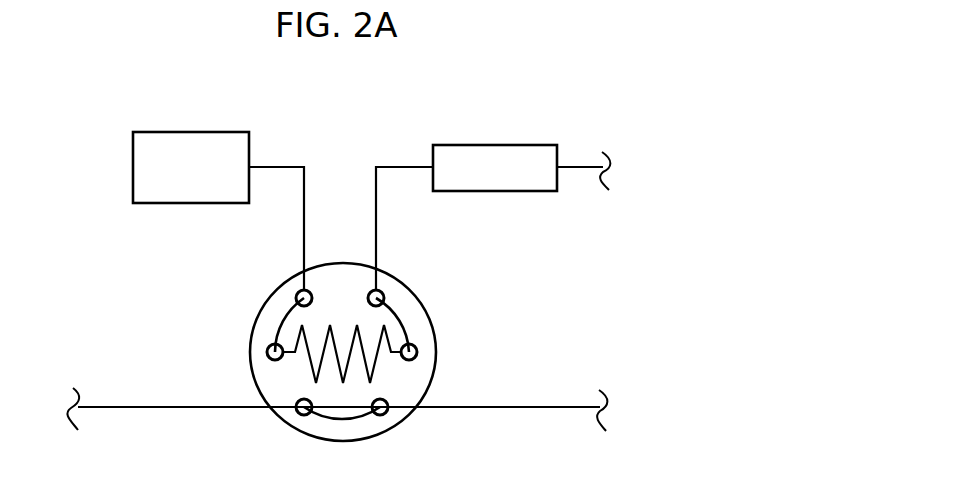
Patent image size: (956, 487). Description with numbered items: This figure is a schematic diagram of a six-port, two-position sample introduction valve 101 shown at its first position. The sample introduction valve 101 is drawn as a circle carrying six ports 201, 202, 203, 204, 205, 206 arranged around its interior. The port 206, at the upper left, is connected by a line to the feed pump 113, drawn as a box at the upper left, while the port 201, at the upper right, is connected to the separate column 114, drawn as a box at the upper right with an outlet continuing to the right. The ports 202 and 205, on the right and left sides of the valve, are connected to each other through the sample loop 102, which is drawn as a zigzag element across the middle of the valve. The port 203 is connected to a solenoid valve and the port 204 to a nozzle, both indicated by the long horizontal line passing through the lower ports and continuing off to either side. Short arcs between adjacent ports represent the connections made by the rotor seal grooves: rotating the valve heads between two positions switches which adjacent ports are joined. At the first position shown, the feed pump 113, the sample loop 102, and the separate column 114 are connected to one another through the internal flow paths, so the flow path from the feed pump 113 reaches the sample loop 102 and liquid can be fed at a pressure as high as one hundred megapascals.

The feed pump 113 is at (133, 165).
The separate column 114 is at (512, 145).
The sample introduction valve 101 is at (433, 320).
The sample loop 102 is at (295, 340).
The port 201 is at (385, 291).
The port 202 is at (419, 346).
The port 203 is at (392, 408).
The port 204 is at (293, 412).
The port 205 is at (266, 353).
The port 206 is at (293, 288).